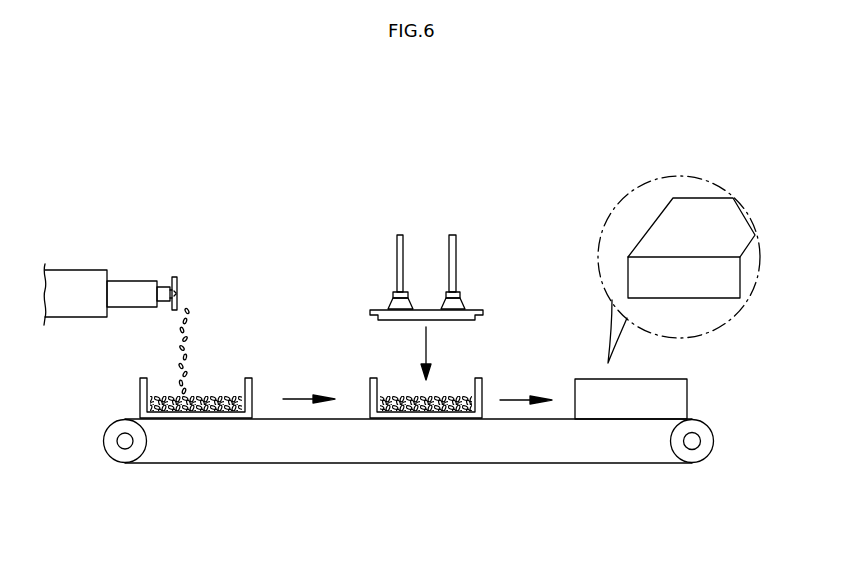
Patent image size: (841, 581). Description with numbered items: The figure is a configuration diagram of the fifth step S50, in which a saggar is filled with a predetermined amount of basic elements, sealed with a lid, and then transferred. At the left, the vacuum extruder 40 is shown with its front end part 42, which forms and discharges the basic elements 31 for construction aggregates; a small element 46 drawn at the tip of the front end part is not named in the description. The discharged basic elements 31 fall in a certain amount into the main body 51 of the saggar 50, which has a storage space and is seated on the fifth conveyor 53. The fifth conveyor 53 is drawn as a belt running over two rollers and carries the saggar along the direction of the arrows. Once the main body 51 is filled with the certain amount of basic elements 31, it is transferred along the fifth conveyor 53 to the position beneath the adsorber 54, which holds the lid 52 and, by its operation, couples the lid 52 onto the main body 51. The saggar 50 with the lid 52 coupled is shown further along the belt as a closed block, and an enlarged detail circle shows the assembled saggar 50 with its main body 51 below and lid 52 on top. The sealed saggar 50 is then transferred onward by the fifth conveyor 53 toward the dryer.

The fifth step S50 is at (368, 184).
The vacuum extruder 40 is at (88, 277).
The front end part 42 is at (163, 290).
The discharge nozzle plate 46 is at (175, 276).
The basic elements for construction aggregates 31 is at (198, 320).
The main body 51 is at (140, 402).
The lid 52 is at (380, 318).
The adsorber 54 is at (402, 262).
The saggar 50 is at (690, 400).
The fifth conveyor 53 is at (185, 455).